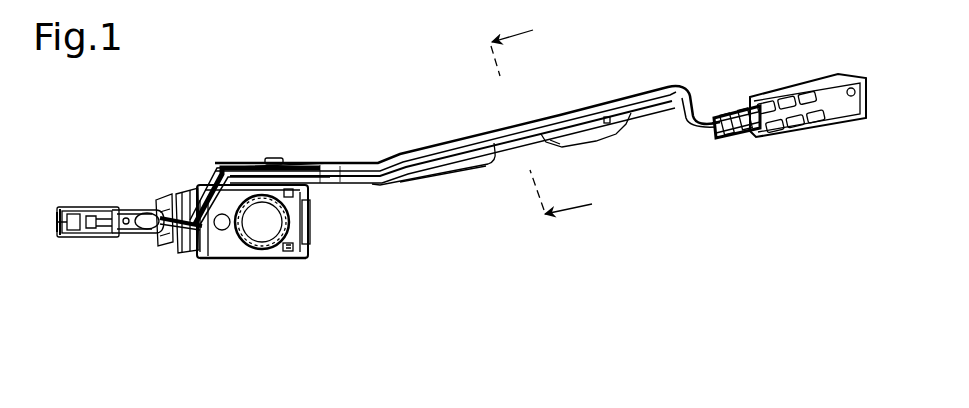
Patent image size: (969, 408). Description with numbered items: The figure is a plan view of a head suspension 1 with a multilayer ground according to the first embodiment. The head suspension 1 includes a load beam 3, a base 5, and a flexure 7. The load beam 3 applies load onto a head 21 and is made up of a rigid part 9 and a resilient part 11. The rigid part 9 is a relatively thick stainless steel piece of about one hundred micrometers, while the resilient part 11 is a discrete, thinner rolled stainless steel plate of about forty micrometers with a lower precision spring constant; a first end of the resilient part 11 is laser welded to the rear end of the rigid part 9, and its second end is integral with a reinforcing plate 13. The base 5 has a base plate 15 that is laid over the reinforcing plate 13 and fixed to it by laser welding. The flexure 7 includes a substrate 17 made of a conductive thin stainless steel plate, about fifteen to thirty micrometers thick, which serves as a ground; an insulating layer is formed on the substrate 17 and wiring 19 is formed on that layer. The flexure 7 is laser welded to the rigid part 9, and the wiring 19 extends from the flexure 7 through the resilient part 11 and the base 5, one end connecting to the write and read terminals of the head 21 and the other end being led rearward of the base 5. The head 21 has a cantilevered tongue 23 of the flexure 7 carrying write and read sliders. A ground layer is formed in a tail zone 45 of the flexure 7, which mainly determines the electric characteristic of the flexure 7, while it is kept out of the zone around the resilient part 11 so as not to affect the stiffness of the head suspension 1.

The head suspension 1 is at (381, 98).
The load beam 3 is at (129, 198).
The base 5 is at (235, 260).
The flexure 7 is at (255, 158).
The rigid part 9 is at (164, 196).
The resilient part 11 is at (189, 190).
The reinforcing plate 13 is at (220, 240).
The base plate 15 is at (280, 260).
The substrate 17 is at (419, 186).
The wiring 19 is at (345, 160).
The head 21 is at (80, 200).
The tongue 23 is at (80, 238).
The tail zone 45 is at (596, 104).